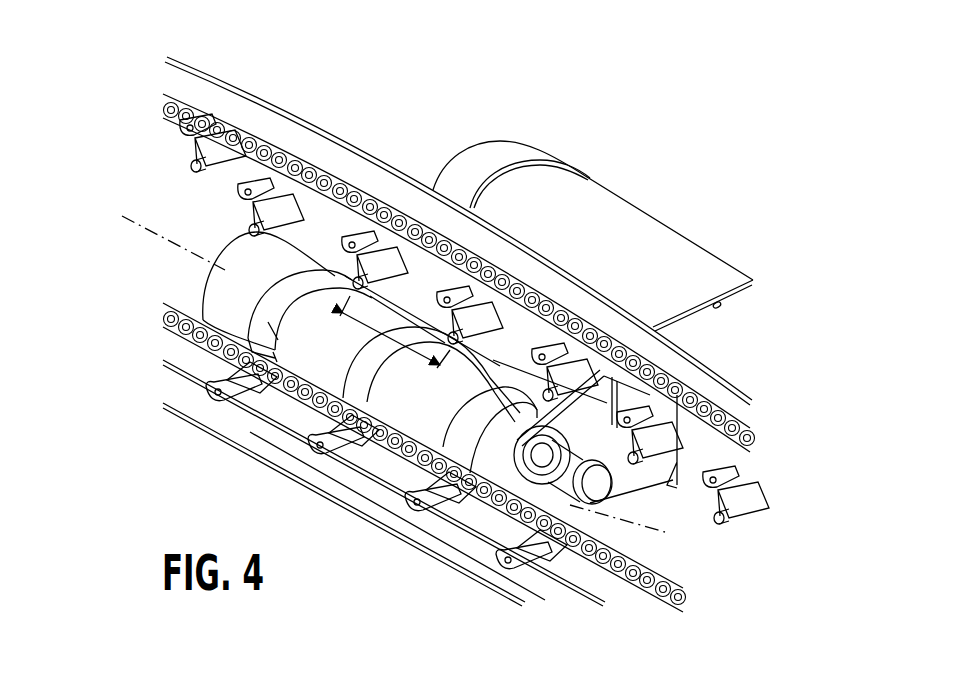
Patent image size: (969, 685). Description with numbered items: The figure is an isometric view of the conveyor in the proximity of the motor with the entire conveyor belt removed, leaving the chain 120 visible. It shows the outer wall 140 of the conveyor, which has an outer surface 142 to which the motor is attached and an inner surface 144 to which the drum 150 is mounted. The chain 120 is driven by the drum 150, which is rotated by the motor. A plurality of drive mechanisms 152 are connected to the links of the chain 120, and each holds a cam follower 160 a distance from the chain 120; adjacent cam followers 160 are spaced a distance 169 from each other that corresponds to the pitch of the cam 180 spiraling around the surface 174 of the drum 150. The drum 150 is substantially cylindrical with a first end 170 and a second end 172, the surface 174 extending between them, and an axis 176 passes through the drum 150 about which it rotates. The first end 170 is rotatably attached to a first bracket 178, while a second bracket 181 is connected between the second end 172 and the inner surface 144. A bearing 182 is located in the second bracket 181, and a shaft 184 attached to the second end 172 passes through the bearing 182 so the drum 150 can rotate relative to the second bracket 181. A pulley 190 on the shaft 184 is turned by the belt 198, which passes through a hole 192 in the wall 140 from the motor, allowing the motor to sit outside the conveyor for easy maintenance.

The chain 120 is at (312, 155).
The outer wall 140 is at (391, 208).
The outer surface 142 is at (246, 90).
The inner surface 144 is at (193, 83).
The drum 150 is at (368, 380).
The drive mechanisms 152 is at (288, 213).
The cam follower 160 is at (470, 343).
The distance 169 is at (377, 327).
The first end 170 is at (355, 321).
The second end 172 is at (432, 547).
The surface 174 is at (232, 302).
The axis 176 is at (197, 277).
The first bracket 178 is at (269, 291).
The cam 180 is at (348, 483).
The second bracket 181 is at (657, 438).
The bearing 182 is at (598, 385).
The shaft 184 is at (502, 515).
The pulley 190 is at (587, 492).
The hole 192 is at (677, 472).
The belt 198 is at (567, 490).